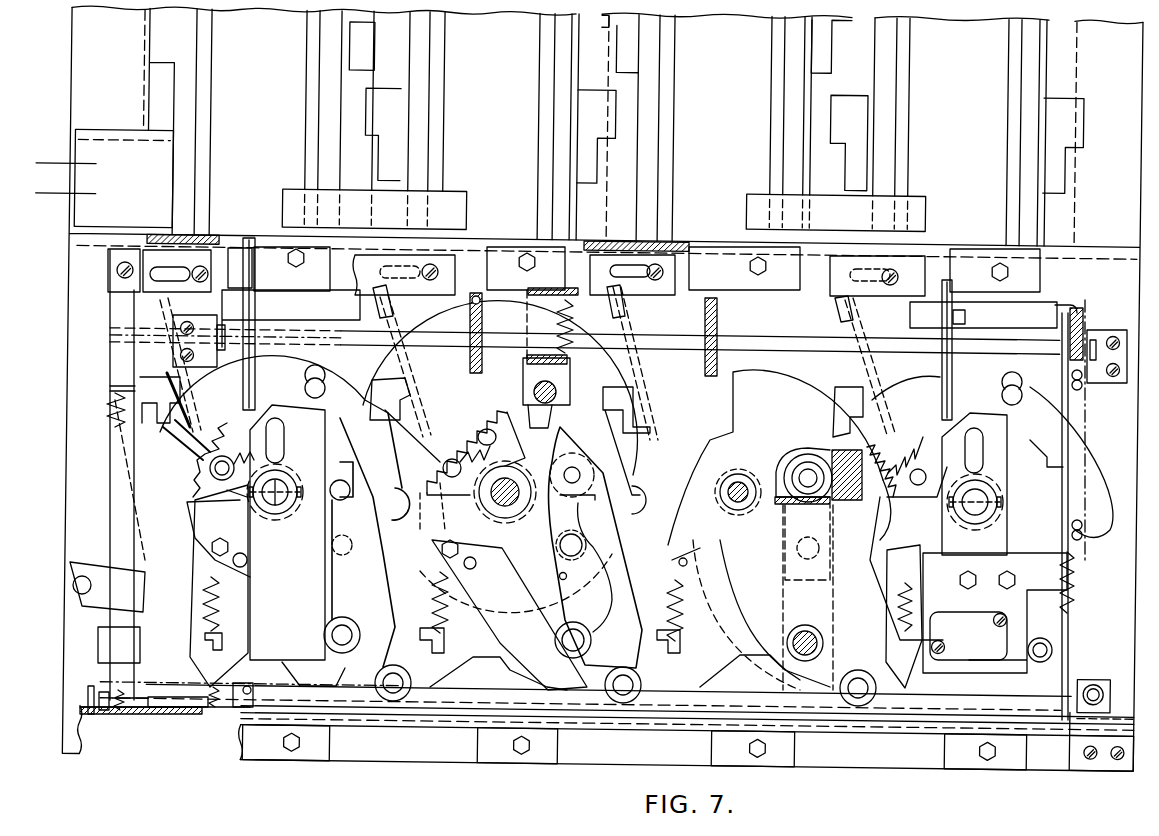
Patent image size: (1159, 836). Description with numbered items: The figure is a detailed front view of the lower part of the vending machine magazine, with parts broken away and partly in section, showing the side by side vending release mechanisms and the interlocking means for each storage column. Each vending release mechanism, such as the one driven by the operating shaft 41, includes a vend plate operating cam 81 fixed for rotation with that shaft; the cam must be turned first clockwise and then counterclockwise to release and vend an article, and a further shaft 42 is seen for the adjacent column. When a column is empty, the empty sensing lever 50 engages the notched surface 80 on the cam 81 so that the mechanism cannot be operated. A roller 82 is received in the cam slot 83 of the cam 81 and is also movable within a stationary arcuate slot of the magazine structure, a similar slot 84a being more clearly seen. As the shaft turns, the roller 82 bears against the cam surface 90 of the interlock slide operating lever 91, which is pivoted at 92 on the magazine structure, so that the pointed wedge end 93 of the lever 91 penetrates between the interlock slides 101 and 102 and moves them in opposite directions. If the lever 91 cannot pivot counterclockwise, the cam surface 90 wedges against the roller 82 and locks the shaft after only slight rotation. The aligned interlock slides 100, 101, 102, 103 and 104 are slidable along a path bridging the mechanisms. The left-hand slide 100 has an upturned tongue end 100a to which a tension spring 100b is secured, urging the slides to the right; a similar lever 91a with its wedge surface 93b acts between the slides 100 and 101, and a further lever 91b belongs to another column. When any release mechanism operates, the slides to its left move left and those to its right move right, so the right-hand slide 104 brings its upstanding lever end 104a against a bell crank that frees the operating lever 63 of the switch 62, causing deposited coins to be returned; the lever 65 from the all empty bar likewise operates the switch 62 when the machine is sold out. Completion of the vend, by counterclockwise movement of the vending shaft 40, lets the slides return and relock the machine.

The vending shaft 40 is at (277, 507).
The operating shaft 41 is at (525, 488).
The pivot pin 42 is at (735, 482).
The empty sensing lever 50 is at (477, 335).
The switch 62 is at (963, 612).
The operating lever 63 is at (990, 660).
The lever 65 is at (1068, 400).
The notched surface 80 is at (466, 375).
The vend plate operating cam 81 is at (617, 566).
The roller 82 is at (577, 624).
The cam slot 83 is at (560, 578).
The slot 84a is at (743, 603).
The cam surface 90 is at (488, 612).
The interlock slide operating lever 91 is at (516, 660).
The interlock slide operating lever 91a is at (296, 668).
The lever 91b is at (890, 663).
The pivot 92 is at (650, 674).
The pointed wedge end 93 is at (406, 652).
The wedge surface 93b is at (195, 655).
The interlock slide 100 is at (202, 706).
The upturned tongue end 100a is at (87, 702).
The tension spring 100b is at (127, 713).
The interlock slide 101 is at (351, 719).
The interlock slide 102 is at (592, 723).
The interlock slide 103 is at (818, 719).
The interlock slide 104 is at (925, 719).
The upstanding lever end 104a is at (1068, 716).